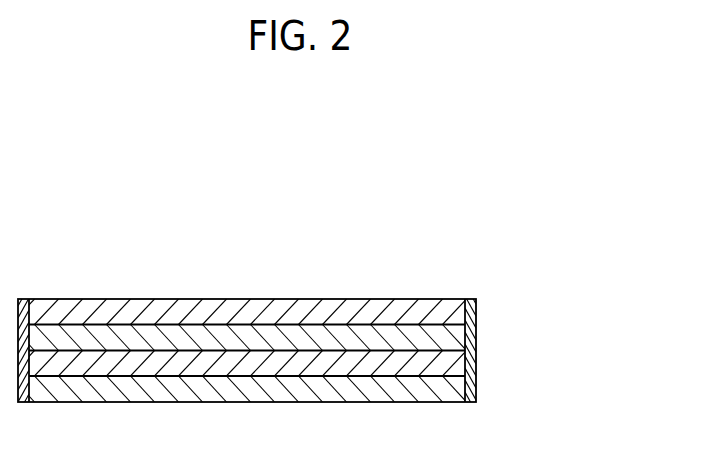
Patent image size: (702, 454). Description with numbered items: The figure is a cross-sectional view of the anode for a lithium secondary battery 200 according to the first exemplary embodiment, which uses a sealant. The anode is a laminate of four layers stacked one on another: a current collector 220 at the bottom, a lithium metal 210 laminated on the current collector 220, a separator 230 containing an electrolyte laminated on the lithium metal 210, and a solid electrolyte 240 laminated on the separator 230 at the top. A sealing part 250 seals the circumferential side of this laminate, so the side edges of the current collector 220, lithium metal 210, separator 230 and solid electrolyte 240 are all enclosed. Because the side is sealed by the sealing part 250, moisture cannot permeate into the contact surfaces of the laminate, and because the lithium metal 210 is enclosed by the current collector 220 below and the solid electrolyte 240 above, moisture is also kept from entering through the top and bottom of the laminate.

The anode for a lithium secondary battery 200 is at (304, 264).
The lithium metal 210 is at (218, 360).
The current collector 220 is at (128, 388).
The separator 230 is at (292, 333).
The solid electrolyte 240 is at (365, 315).
The sealing part 250 is at (472, 335).